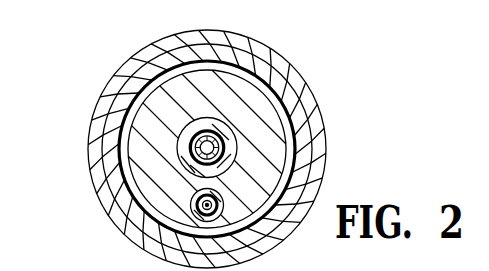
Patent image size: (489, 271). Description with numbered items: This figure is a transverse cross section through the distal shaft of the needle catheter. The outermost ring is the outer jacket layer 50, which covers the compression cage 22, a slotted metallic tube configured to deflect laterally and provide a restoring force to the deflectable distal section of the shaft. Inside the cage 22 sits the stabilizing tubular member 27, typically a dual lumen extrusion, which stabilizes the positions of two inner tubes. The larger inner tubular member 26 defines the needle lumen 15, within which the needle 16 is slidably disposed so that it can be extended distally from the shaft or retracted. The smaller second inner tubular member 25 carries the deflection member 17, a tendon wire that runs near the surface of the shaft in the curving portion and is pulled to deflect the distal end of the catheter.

The outer jacket layer 50 is at (266, 52).
The compression cage 22 is at (163, 60).
The stabilizing tubular member 27 is at (143, 120).
The needle lumen 15 is at (180, 161).
The needle 16 is at (212, 131).
The inner tubular member 26 is at (225, 146).
The deflection member 17 is at (193, 212).
The second inner tubular member 25 is at (219, 207).